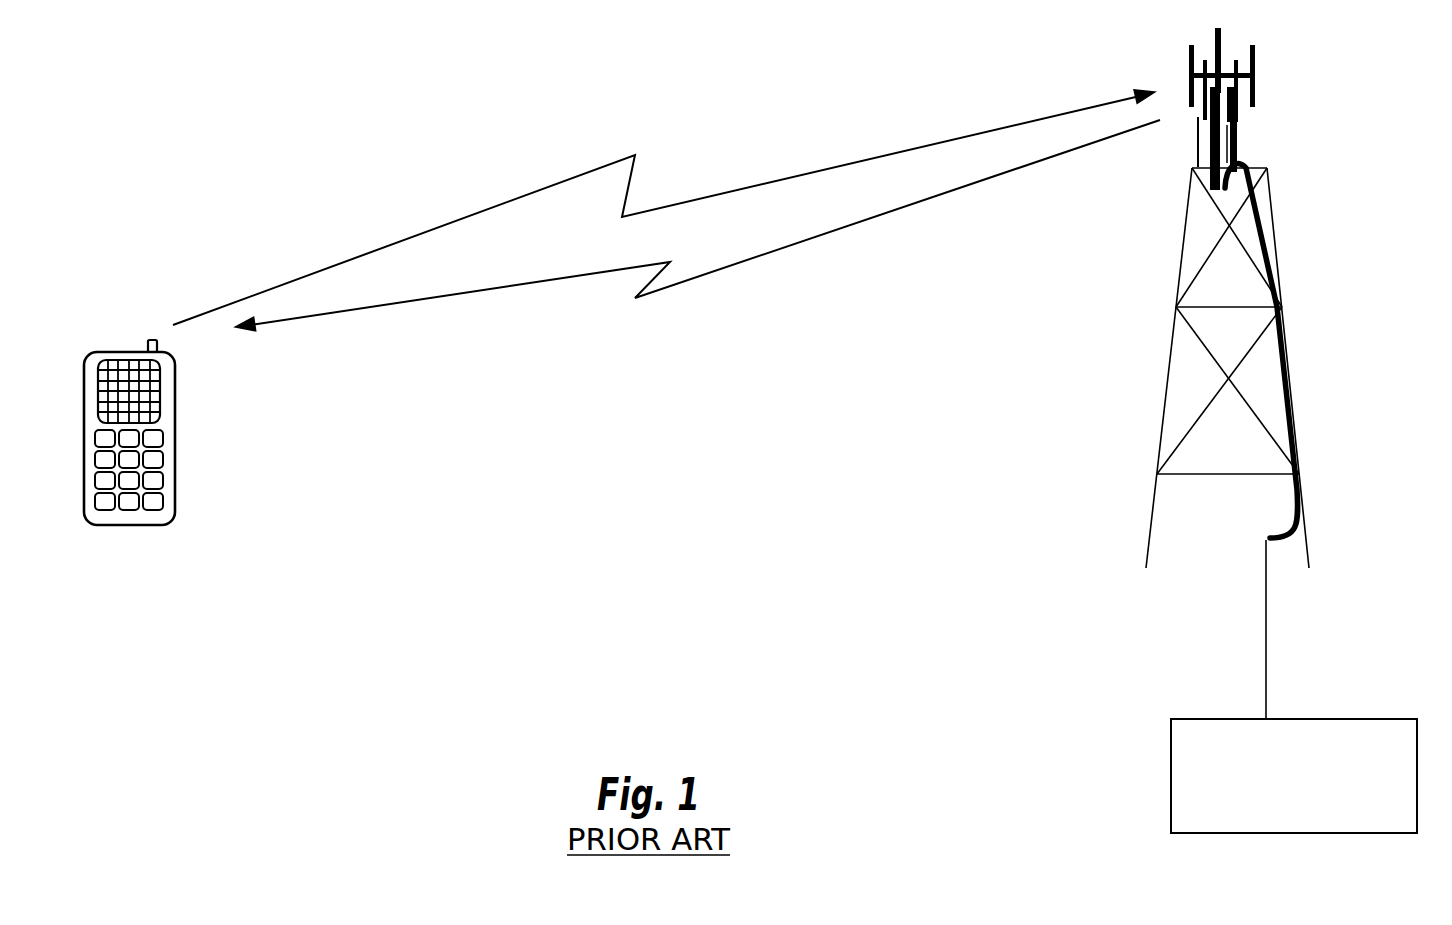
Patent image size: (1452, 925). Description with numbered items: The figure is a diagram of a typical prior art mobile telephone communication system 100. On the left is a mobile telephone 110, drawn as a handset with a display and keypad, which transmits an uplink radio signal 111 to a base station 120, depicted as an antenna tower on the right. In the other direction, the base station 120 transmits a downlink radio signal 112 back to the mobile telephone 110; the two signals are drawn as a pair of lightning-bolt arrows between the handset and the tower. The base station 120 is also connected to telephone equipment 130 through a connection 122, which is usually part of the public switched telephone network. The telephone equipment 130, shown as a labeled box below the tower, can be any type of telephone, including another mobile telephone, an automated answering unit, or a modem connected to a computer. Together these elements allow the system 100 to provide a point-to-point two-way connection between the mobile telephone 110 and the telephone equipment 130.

The mobile telephone communication system 100 is at (742, 431).
The mobile telephone 110 is at (127, 517).
The uplink radio signal 111 is at (777, 178).
The downlink radio signal 112 is at (820, 234).
The base station 120 is at (1187, 218).
The connection 122 is at (1266, 650).
The telephone equipment 130 is at (1170, 763).